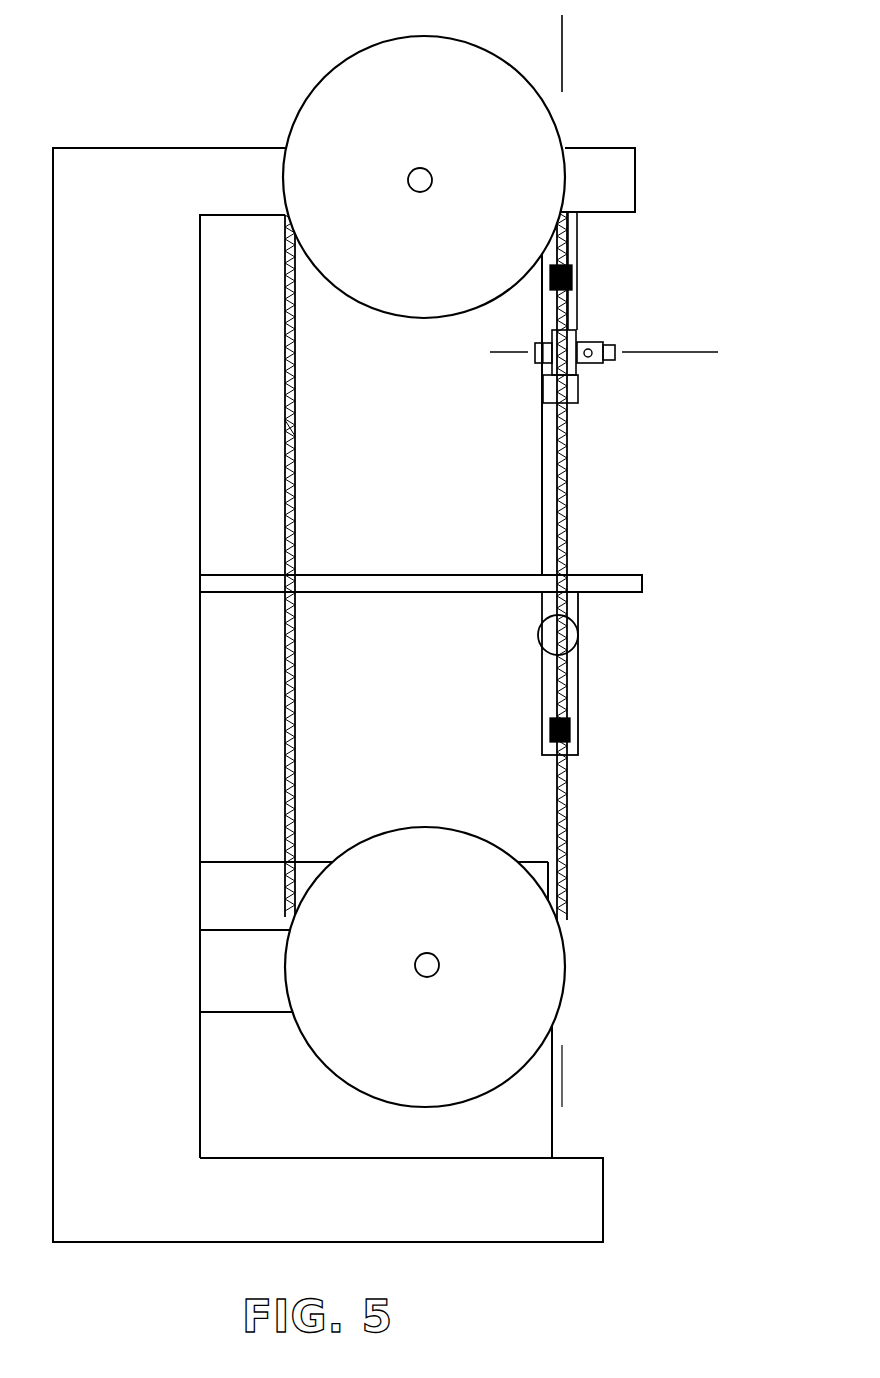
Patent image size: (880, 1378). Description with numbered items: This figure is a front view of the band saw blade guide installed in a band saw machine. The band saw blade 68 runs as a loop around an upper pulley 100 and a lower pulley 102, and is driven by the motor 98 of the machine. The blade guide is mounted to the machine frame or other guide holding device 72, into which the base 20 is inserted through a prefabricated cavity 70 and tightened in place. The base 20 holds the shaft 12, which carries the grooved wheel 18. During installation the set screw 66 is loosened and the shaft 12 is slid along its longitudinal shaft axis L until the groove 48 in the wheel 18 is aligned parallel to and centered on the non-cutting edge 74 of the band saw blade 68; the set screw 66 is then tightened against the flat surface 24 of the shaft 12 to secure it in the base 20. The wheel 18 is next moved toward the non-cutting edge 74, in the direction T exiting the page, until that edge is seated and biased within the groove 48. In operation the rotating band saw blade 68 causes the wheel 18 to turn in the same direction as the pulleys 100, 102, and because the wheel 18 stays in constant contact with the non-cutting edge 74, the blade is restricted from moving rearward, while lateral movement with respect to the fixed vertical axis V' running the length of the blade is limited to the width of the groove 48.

The pulley 100 is at (355, 78).
The pulley 102 is at (547, 973).
The motor 98 is at (523, 1122).
The band saw blade 68 is at (296, 384).
The non-cutting edge 74 is at (291, 428).
The guide holding device 72 is at (572, 237).
The prefabricated cavity 70 is at (572, 277).
The wheel 18 is at (577, 328).
The groove 48 is at (554, 363).
The flat surface 24 is at (607, 361).
The set screw 66 is at (590, 361).
The base 20 is at (583, 362).
The shaft 12 is at (614, 347).
The longitudinal shaft axis L is at (703, 355).
The fixed vertical axis V' is at (590, 53).
The direction T is at (758, 527).